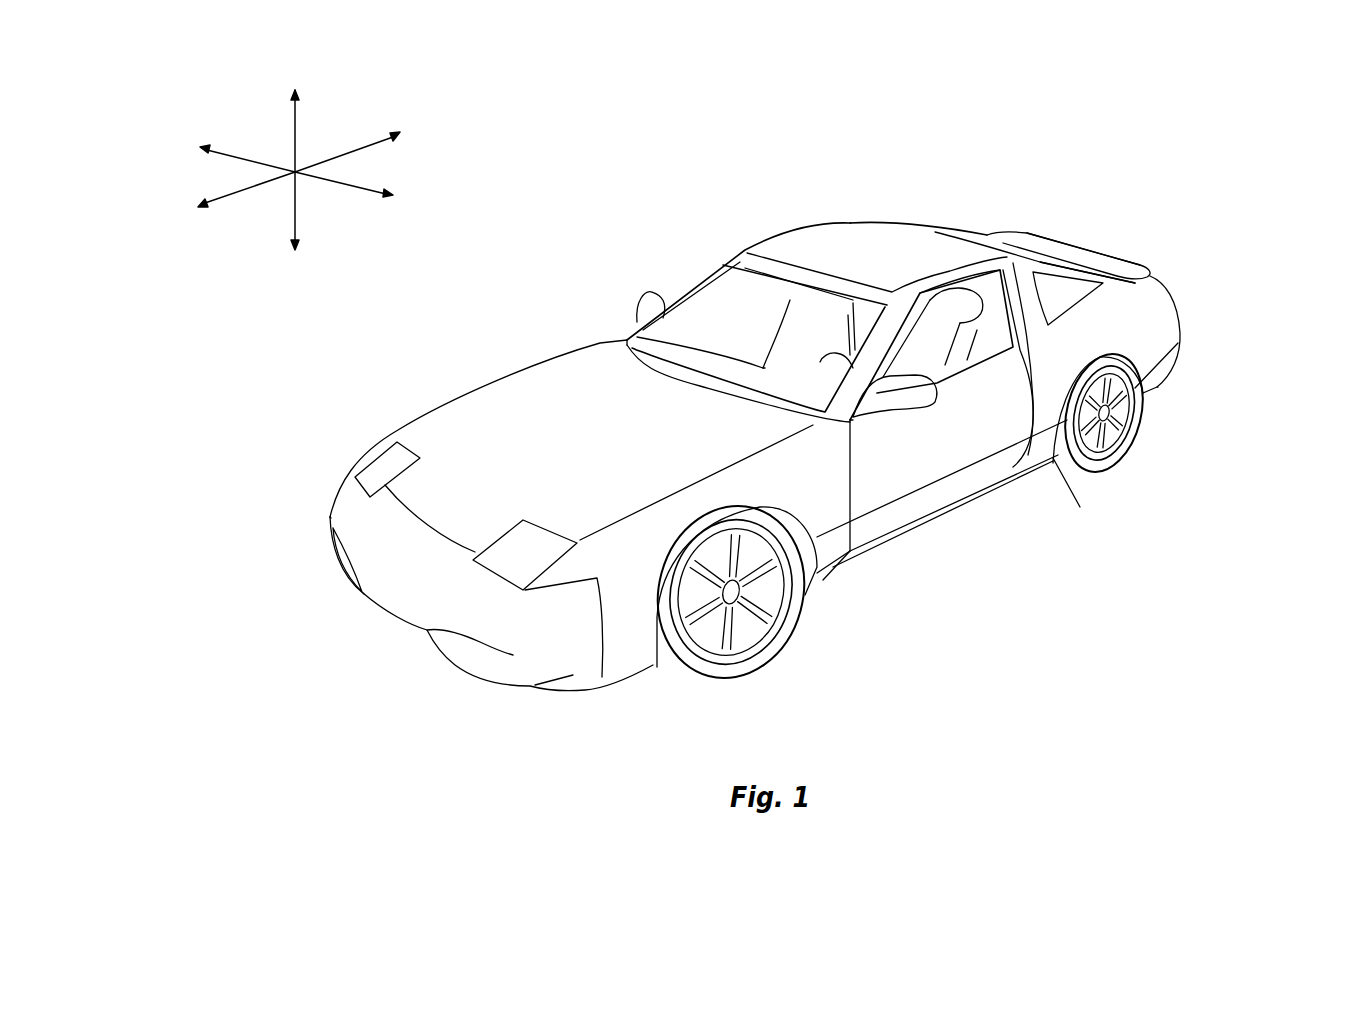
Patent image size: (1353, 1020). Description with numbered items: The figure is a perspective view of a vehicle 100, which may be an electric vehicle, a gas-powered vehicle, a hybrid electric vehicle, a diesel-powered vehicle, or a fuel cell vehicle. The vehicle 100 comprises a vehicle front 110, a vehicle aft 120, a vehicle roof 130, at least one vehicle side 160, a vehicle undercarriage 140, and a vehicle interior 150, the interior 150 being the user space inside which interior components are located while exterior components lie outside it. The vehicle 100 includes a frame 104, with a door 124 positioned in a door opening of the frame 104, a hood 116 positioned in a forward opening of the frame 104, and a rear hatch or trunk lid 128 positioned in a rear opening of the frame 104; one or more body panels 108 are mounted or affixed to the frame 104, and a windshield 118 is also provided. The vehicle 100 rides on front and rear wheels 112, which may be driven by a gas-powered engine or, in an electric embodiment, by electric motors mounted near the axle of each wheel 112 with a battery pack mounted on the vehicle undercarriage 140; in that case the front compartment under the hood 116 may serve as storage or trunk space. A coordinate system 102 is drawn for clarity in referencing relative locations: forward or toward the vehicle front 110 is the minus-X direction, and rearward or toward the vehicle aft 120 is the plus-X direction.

The vehicle 100 is at (768, 397).
The coordinate system 102 is at (295, 172).
The frame 104 is at (953, 510).
The body panels 108 is at (377, 553).
The vehicle front 110 is at (350, 653).
The wheel 112 is at (760, 657).
The hood 116 is at (495, 410).
The windshield 118 is at (728, 278).
The vehicle aft 120 is at (1087, 227).
The door 124 is at (897, 473).
The rear hatch or trunk lid 128 is at (1123, 275).
The vehicle roof 130 is at (876, 252).
The vehicle undercarriage 140 is at (880, 556).
The vehicle interior 150 is at (723, 327).
The vehicle side 160 is at (963, 450).